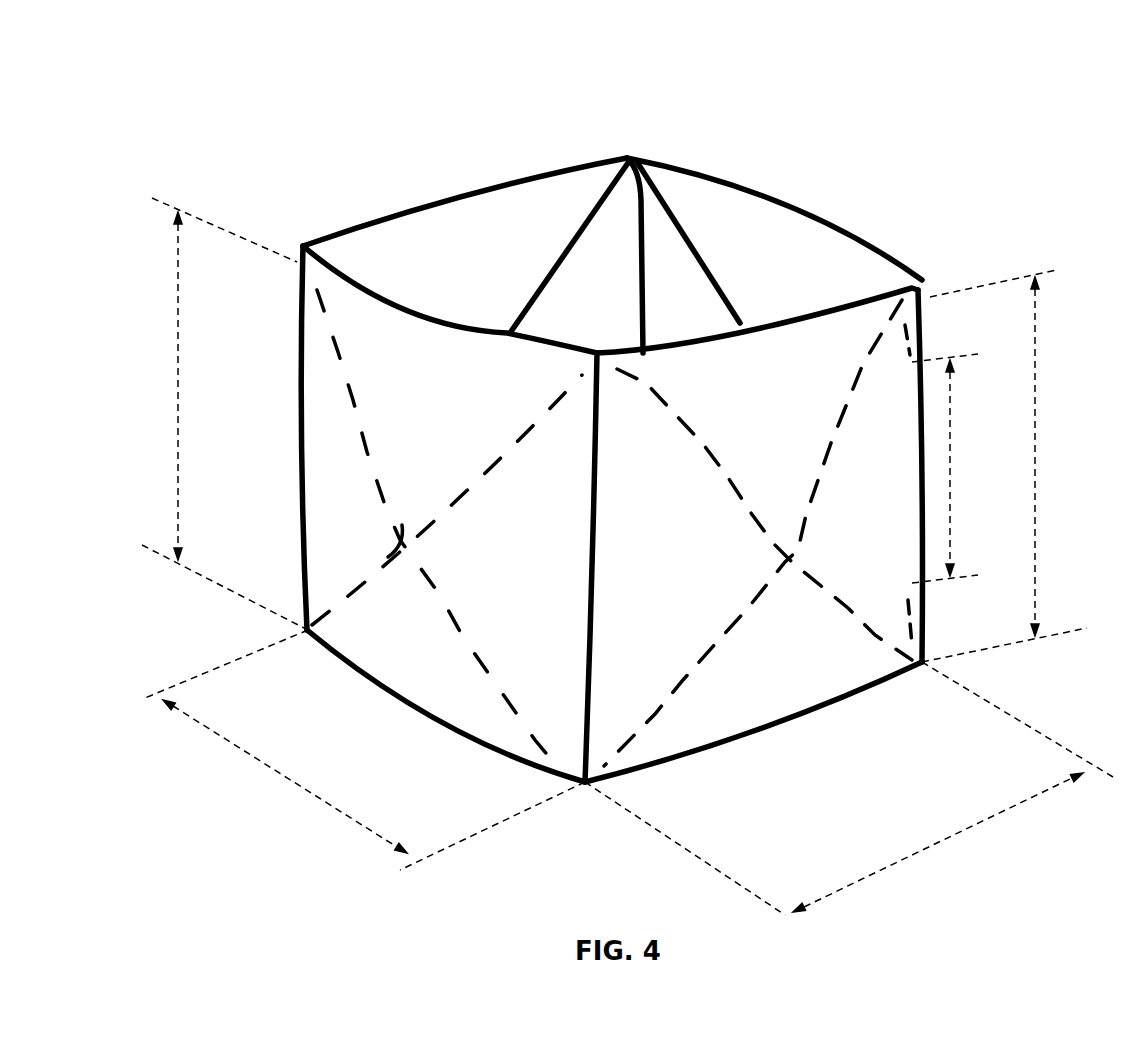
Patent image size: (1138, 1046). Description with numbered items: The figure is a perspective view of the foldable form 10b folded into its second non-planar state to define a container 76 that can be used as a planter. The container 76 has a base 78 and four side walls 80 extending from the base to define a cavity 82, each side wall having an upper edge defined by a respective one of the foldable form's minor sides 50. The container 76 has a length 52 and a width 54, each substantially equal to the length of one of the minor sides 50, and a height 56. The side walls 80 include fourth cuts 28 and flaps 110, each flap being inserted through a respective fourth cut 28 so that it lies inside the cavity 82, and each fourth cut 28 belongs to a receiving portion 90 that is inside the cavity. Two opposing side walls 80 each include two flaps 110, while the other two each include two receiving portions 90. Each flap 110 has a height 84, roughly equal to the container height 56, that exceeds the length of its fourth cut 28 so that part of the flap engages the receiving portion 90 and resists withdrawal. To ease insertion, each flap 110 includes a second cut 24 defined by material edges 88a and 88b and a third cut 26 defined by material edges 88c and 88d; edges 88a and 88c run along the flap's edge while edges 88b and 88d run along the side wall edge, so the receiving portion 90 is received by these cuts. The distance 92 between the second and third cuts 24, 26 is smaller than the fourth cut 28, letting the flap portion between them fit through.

The container 76 is at (278, 127).
The third cut 26 is at (623, 137).
The second cut 24 is at (583, 804).
The fourth cut 28 is at (640, 273).
The material edge 88a is at (590, 745).
The material edge 88b is at (580, 756).
The material edge 88c is at (627, 170).
The material edge 88d is at (642, 160).
The receiving portion 90 is at (647, 200).
The minor side 50 is at (318, 262).
The side wall 80 is at (372, 260).
The cavity 82 is at (475, 261).
The flap 110 is at (570, 273).
The foldable form 10b is at (900, 260).
The height 56 is at (177, 358).
The length 52 is at (222, 737).
The width 54 is at (943, 842).
The height 84 is at (1040, 463).
The distance 92 is at (953, 530).
The base 78 is at (845, 695).